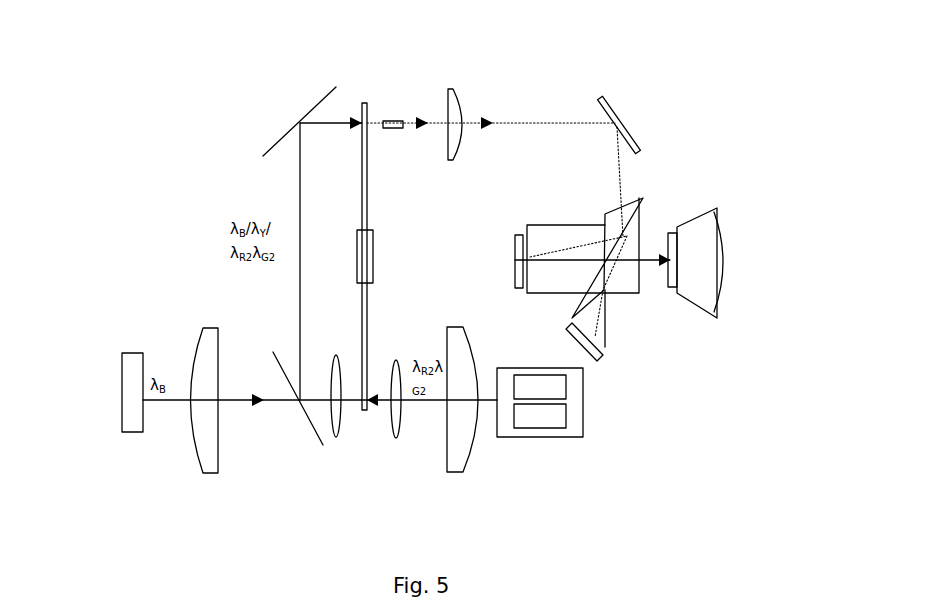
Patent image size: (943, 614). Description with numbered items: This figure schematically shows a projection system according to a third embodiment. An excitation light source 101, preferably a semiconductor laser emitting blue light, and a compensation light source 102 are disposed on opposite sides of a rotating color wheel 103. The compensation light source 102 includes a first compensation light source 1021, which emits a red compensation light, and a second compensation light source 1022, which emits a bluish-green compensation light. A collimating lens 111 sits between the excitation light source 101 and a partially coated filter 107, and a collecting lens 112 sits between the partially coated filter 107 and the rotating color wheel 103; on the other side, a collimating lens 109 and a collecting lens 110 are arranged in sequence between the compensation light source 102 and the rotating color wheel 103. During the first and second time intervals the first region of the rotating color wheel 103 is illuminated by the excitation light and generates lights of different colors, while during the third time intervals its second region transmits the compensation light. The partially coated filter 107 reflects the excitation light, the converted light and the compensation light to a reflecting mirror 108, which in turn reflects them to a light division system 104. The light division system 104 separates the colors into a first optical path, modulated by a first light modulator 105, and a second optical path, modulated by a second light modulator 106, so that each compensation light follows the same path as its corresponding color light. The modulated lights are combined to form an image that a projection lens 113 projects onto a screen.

The excitation light source 101 is at (131, 378).
The compensation light source 102 is at (579, 445).
The first compensation light source 1021 is at (540, 387).
The second compensation light source 1022 is at (540, 416).
The rotating color wheel 103 is at (363, 103).
The light division system 104 is at (623, 280).
The first light modulator 105 is at (517, 273).
The second light modulator 106 is at (597, 357).
The partially coated filter 107 is at (317, 427).
The reflecting mirror 108 is at (280, 145).
The collimating lens 109 is at (460, 460).
The collecting lens 110 is at (397, 438).
The collimating lens 111 is at (210, 460).
The collecting lens 112 is at (335, 437).
The projection lens 113 is at (705, 282).